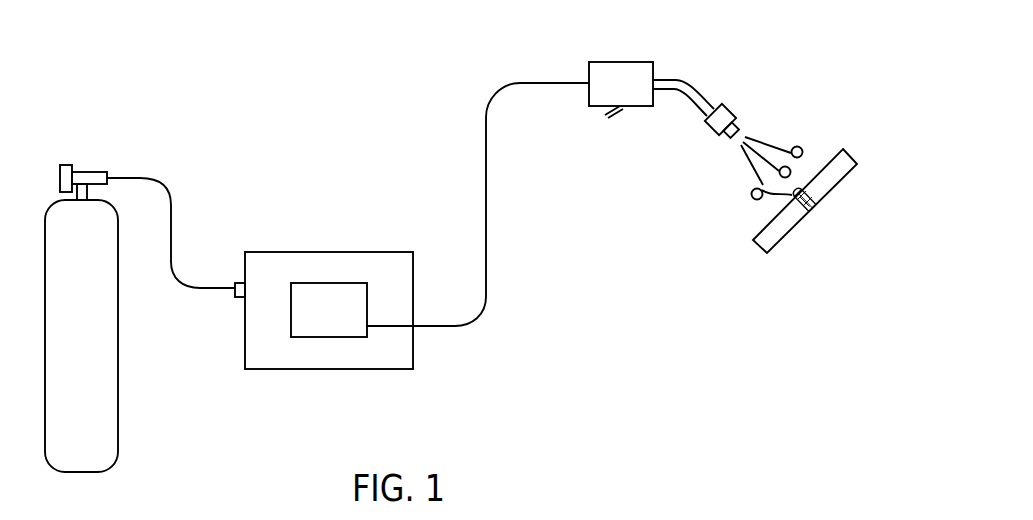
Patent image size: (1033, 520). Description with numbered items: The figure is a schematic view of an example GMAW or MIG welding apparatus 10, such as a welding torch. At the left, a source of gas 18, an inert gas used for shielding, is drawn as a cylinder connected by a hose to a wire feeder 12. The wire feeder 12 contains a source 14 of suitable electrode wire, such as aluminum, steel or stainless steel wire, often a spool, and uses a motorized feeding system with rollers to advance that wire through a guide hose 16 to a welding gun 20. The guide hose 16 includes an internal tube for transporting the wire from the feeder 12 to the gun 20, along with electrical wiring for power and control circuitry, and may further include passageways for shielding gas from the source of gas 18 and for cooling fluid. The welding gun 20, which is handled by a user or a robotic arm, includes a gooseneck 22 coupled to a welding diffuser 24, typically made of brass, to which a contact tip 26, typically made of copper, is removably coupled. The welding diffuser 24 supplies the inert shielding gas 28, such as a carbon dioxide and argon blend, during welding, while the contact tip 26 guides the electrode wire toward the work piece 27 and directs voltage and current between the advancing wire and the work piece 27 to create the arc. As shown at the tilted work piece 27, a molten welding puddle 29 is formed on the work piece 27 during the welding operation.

The welding apparatus 10 is at (196, 84).
The wire feeder 12 is at (272, 357).
The source of electrode wire 14 is at (354, 290).
The guide hose 16 is at (486, 212).
The source of gas 18 is at (108, 352).
The welding gun 20 is at (621, 70).
The gooseneck 22 is at (684, 75).
The welding diffuser 24 is at (735, 110).
The contact tip 26 is at (742, 127).
The work piece 27 is at (775, 247).
The shielding gas 28 is at (818, 132).
The molten welding puddle 29 is at (752, 188).